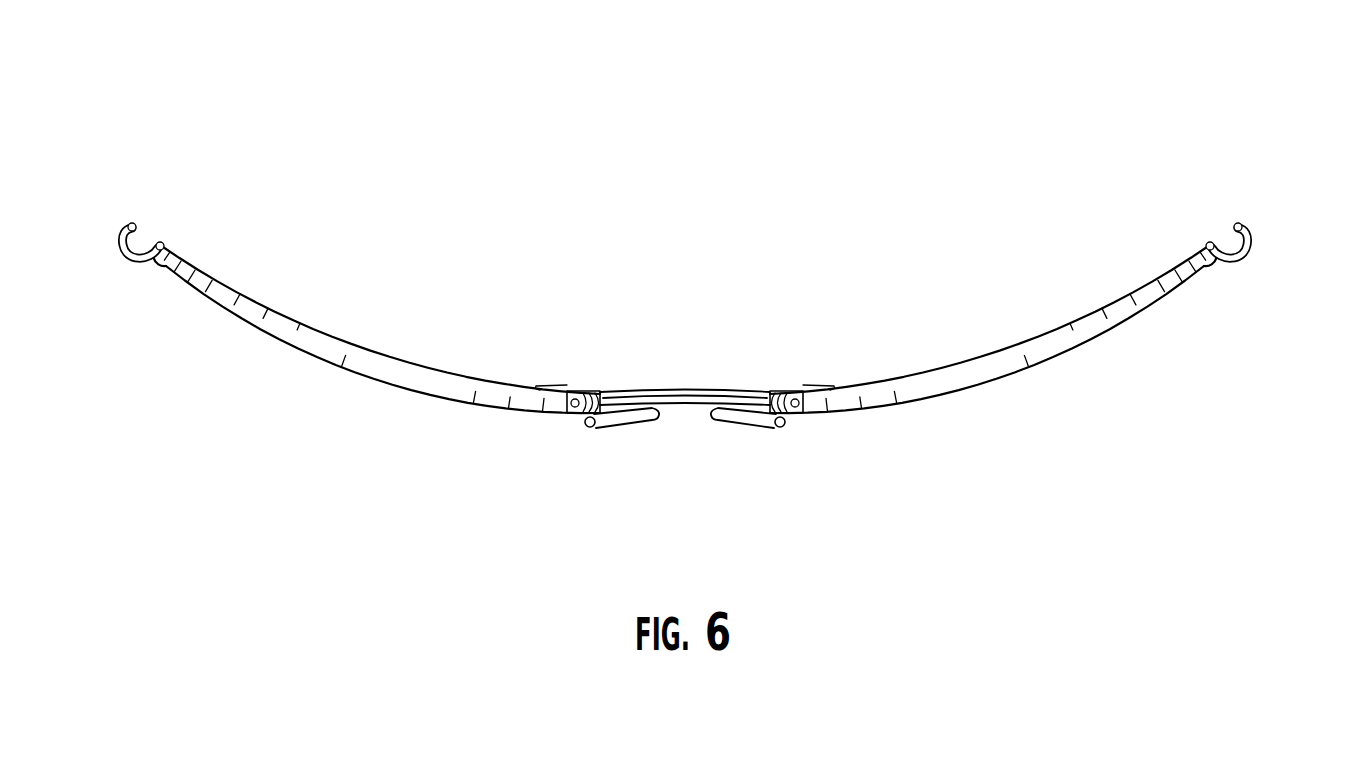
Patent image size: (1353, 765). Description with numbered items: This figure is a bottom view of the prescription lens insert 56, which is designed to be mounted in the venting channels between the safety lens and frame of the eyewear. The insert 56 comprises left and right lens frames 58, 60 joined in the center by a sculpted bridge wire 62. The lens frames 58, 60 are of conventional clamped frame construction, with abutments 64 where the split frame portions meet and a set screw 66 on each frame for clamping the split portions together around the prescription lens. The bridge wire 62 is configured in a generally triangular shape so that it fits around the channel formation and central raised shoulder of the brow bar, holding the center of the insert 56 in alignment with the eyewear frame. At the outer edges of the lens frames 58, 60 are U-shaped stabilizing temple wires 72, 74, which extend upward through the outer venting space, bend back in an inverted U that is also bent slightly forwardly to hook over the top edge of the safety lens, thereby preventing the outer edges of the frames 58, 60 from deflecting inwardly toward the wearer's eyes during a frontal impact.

The prescription lens insert 56 is at (908, 145).
The left lens frame 58 is at (350, 355).
The right lens frame 60 is at (1005, 357).
The sculpted bridge wire 62 is at (689, 394).
The abutments 64 is at (573, 414).
The set screw 66 is at (575, 400).
The temple wire 72 is at (142, 265).
The temple wire 74 is at (1232, 258).